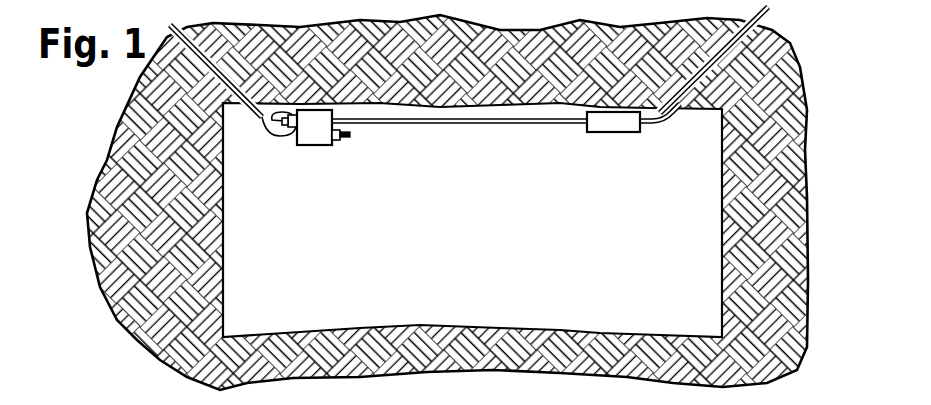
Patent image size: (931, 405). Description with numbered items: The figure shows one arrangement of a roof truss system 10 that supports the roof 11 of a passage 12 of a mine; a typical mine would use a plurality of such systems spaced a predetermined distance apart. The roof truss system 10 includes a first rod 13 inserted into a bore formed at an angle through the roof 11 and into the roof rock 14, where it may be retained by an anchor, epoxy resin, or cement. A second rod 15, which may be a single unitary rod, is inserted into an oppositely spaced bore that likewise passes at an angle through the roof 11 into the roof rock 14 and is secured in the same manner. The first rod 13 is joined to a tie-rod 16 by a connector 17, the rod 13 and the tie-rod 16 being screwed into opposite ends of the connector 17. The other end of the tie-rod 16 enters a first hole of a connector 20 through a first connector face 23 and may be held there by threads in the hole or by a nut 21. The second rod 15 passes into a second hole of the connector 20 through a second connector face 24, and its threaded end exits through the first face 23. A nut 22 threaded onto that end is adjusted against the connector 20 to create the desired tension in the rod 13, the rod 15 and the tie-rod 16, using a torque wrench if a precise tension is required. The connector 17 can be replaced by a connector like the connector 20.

The roof truss system 10 is at (462, 138).
The roof 11 is at (699, 110).
The passage 12 is at (618, 281).
The first rod 13 is at (772, 12).
The roof rock 14 is at (545, 53).
The second rod 15 is at (247, 112).
The tie-rod 16 is at (499, 124).
The connector 17 is at (605, 132).
The connector 20 is at (328, 173).
The nut 21 is at (300, 146).
The nut 22 is at (340, 146).
The first connector face 23 is at (352, 121).
The second connector face 24 is at (268, 124).